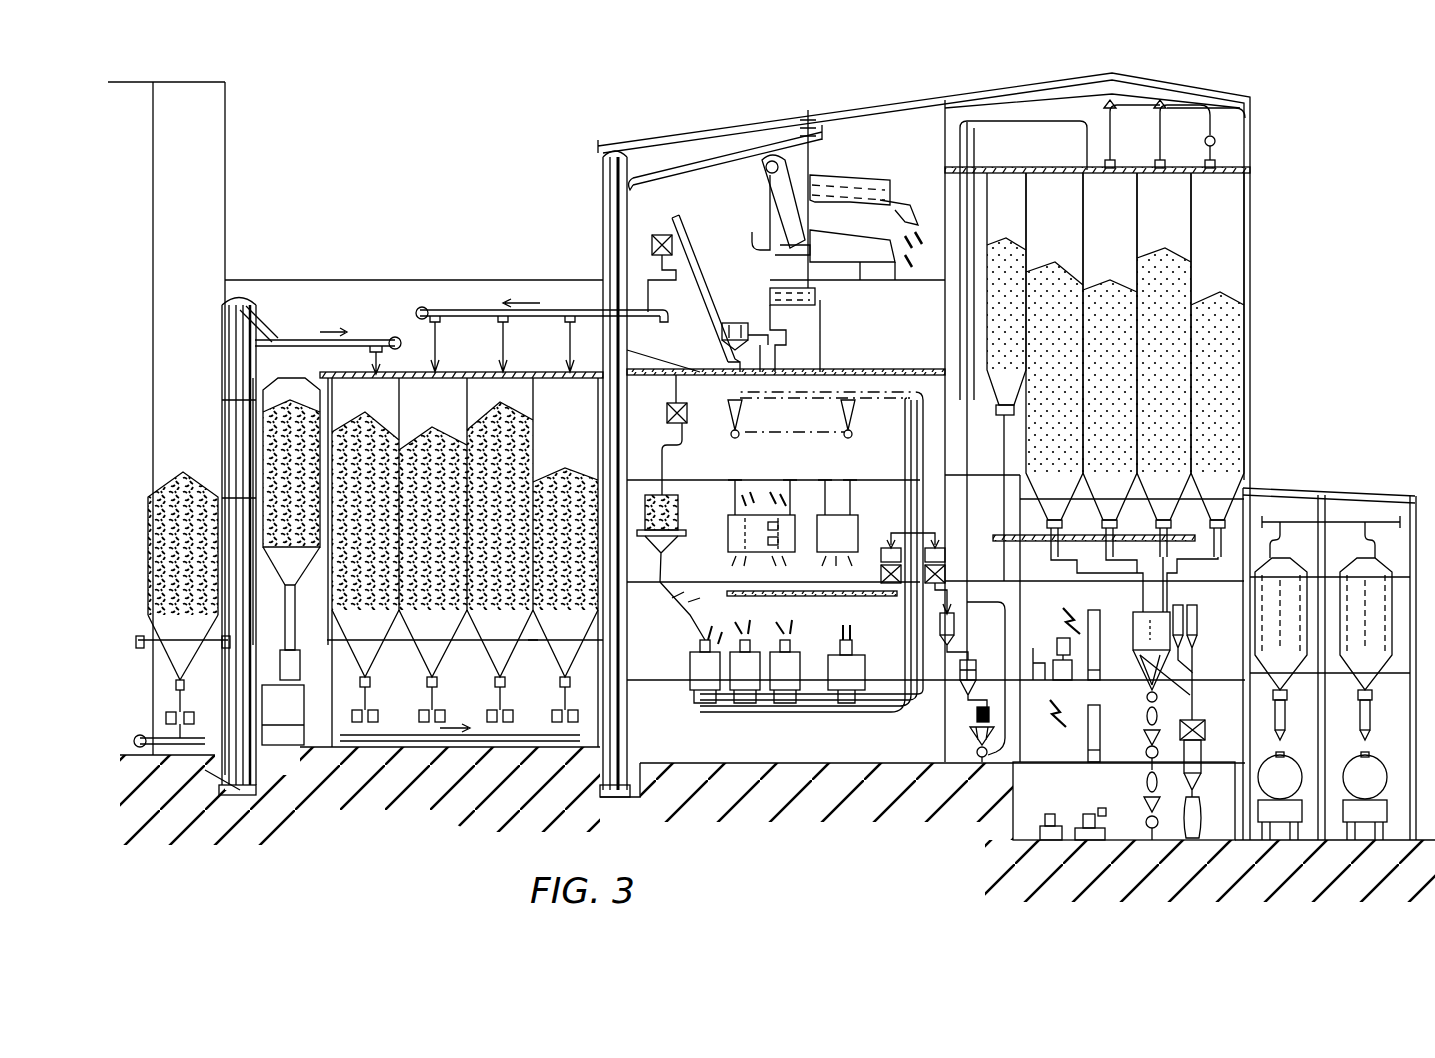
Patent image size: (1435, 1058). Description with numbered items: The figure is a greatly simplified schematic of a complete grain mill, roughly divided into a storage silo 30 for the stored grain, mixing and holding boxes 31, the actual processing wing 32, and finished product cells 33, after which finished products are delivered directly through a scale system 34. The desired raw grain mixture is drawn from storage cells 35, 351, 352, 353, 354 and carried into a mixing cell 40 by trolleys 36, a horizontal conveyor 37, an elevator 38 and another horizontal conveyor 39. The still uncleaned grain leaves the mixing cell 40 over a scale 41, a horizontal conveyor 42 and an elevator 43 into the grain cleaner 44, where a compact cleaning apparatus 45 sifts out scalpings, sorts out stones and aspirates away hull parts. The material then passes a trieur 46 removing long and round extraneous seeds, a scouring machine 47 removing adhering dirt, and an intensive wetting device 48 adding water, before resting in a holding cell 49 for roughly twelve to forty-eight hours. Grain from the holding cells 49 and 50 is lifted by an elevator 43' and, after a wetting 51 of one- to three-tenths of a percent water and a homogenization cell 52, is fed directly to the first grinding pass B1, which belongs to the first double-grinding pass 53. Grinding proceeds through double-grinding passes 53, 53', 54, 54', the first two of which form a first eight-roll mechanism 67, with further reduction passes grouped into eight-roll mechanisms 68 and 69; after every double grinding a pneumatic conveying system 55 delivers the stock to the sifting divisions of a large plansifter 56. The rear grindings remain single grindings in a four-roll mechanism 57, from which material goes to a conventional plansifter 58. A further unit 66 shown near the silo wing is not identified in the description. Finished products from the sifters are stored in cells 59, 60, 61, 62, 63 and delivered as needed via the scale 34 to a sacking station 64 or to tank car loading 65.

The storage silo 30 is at (679, 424).
The mixing and holding boxes 31 is at (362, 826).
The processing wing 32 is at (800, 812).
The finished product cells 33 is at (1268, 274).
The scale system 34 is at (1212, 608).
The storage cells 35 is at (183, 403).
The storage cell 351 is at (186, 168).
The storage cell 352 is at (186, 194).
The storage cell 353 is at (186, 219).
The raw material storage bin 354 is at (186, 244).
The trolleys 36 is at (170, 718).
The horizontal conveyor 37 is at (134, 741).
The elevator 38 is at (270, 330).
The horizontal conveyor 39 is at (335, 340).
The mixing cell 40 is at (366, 450).
The scale 41 is at (365, 702).
The horizontal conveyor 42 is at (448, 745).
The elevator 43 is at (586, 474).
The elevator 43' is at (662, 499).
The grain cleaner 44 is at (688, 170).
The compact cleaning apparatus 45 is at (845, 182).
The trieur 46 is at (818, 297).
The scouring machine 47 is at (735, 322).
The intensive wetting device 48 is at (686, 255).
The holding cell 49 is at (480, 480).
The holding cell 50 is at (575, 500).
The wetting 51 is at (665, 437).
The homogenization cell 52 is at (680, 520).
The first double-grinding pass 53 is at (680, 679).
The second double-grinding pass 53' is at (717, 715).
The double-grinding pass 54 is at (756, 696).
The double-grinding pass 54' is at (784, 696).
The pneumatic conveying system 55 is at (890, 700).
The large plansifter 56 is at (730, 543).
The four-roll mechanism 57 is at (852, 655).
The plansifter 58 is at (848, 528).
The cell 59 is at (1164, 392).
The cell 60 is at (1205, 392).
The cell 61 is at (1006, 377).
The cell 62 is at (1084, 392).
The cell 63 is at (1110, 373).
The sacking station 64 is at (1150, 857).
The tank car loading 65 is at (1300, 488).
The electrical equipment 66 is at (1063, 676).
The first eight-roll mechanism 67 is at (716, 638).
The eight-roll mechanism 68 is at (754, 636).
The eight-roll mechanism 69 is at (799, 636).
The first grinding pass B1 is at (677, 623).